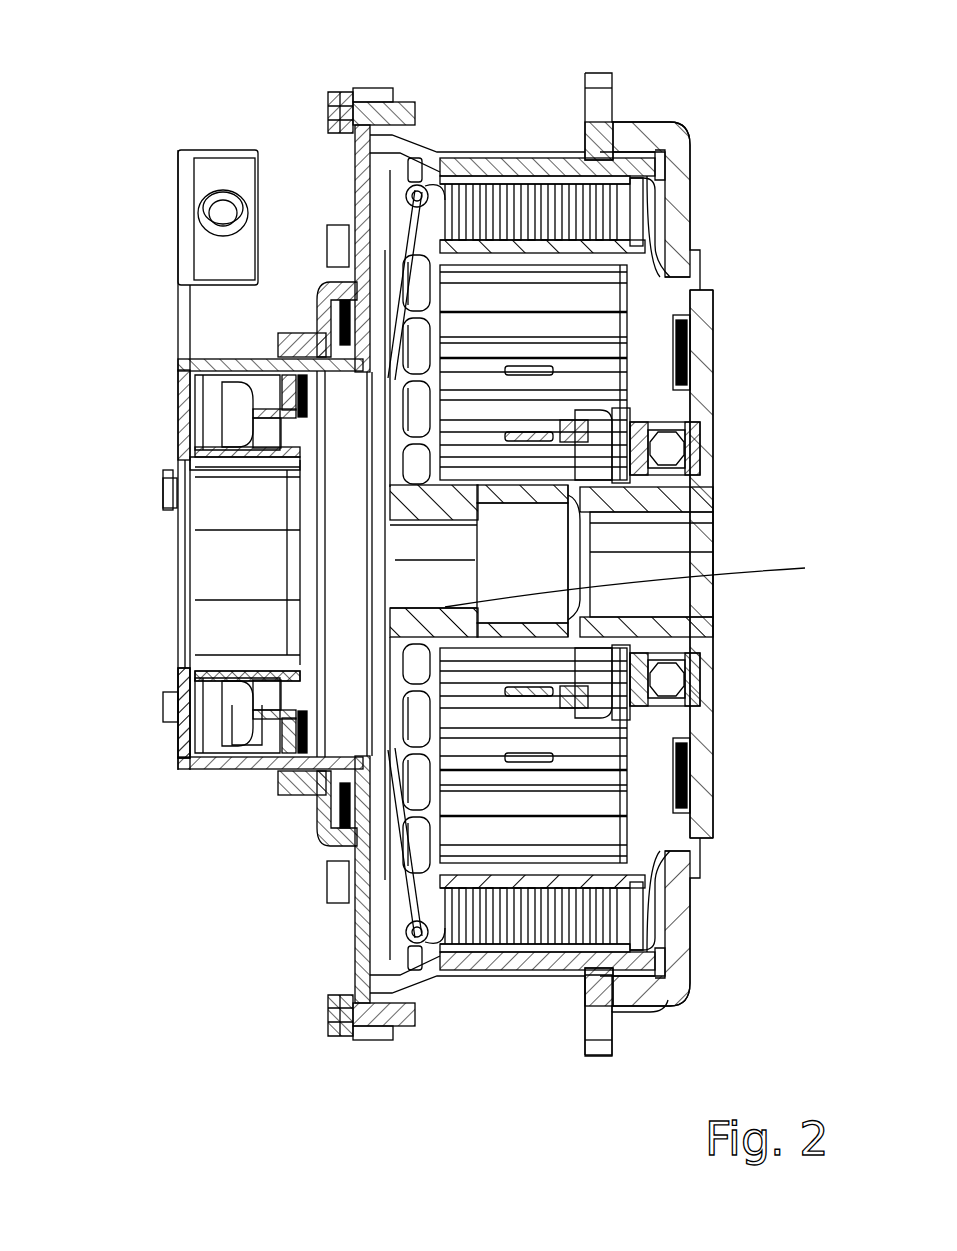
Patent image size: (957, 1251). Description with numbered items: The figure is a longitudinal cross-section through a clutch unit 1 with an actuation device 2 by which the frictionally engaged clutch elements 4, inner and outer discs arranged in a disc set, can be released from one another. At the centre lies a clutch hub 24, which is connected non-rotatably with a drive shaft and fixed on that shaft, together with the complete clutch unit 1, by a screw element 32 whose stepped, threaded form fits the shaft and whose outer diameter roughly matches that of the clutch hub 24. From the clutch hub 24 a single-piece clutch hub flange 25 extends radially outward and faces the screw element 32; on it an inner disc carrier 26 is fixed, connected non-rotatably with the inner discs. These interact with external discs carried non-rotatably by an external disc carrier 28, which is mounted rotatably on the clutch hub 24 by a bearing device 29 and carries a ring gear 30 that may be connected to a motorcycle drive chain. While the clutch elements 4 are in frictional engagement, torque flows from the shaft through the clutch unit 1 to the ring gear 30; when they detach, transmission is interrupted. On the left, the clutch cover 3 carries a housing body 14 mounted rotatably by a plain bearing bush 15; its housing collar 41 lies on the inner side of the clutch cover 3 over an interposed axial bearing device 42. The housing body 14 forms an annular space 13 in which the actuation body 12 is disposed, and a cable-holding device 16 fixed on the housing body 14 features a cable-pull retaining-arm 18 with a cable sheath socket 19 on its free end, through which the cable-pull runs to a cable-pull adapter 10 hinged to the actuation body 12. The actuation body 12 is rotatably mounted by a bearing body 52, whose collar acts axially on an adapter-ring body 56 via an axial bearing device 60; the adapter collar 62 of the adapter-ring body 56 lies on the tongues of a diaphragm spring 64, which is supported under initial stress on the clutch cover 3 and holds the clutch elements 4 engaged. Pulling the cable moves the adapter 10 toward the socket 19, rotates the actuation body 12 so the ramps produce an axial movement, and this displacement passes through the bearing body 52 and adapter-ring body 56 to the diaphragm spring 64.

The clutch unit 1 is at (762, 90).
The actuation device 2 is at (148, 558).
The clutch cover 3 is at (356, 960).
The clutch elements 4 is at (530, 178).
The cable-pull adapter 10 is at (215, 403).
The actuation body 12 is at (245, 738).
The annular space 13 is at (267, 742).
The housing body 14 is at (222, 773).
The bearing bush 15 is at (295, 335).
The cable-holding device 16 is at (167, 684).
The cable-pull retaining-arm 18 is at (180, 320).
The cable sheath socket 19 is at (205, 208).
The clutch hub 24 is at (730, 625).
The clutch hub flange 25 is at (705, 478).
The inner disc carrier 26 is at (702, 352).
The external disc carrier 28 is at (572, 163).
The bearing device 29 is at (716, 668).
The ring gear 30 is at (600, 1020).
The screw element 32 is at (808, 568).
The housing collar 41 is at (325, 292).
The axial bearing device 42 is at (322, 835).
The bearing body 52 is at (205, 468).
The adapter-ring body 56 is at (372, 367).
The axial bearing device 60 is at (298, 780).
The adapter collar 62 is at (356, 262).
The diaphragm spring 64 is at (385, 885).